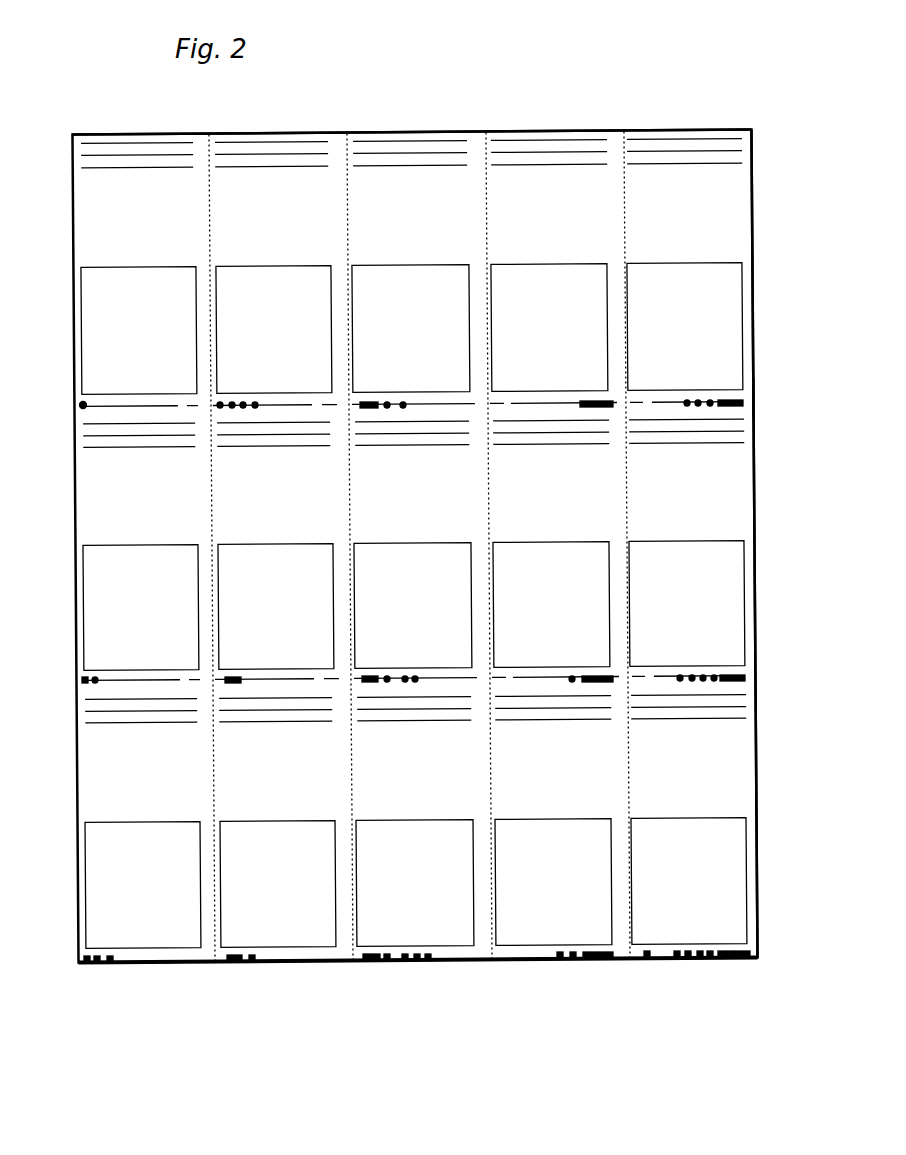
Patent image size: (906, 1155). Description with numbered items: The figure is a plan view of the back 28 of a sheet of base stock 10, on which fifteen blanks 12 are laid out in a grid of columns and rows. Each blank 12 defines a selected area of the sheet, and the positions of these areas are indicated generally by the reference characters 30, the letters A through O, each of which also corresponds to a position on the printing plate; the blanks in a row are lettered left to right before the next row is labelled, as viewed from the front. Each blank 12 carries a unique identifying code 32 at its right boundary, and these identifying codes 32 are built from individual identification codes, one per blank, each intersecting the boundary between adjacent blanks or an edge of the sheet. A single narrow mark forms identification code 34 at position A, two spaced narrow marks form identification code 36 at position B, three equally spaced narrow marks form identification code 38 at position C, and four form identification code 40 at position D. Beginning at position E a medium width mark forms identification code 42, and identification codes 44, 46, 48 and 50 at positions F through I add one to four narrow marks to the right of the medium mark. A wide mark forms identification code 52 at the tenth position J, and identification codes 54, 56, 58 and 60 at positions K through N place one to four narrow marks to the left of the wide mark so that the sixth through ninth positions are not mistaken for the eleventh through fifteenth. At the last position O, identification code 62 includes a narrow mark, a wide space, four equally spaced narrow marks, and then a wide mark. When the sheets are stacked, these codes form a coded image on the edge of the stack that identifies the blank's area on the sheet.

The base stock 10 is at (757, 478).
The blank 12 is at (77, 214).
The back 28 is at (441, 132).
The reference characters 30 is at (712, 798).
The unique identifying code 32 is at (753, 394).
The identification code 34 is at (81, 404).
The identification code 36 is at (88, 676).
The identification code 38 is at (97, 968).
The identification code 40 is at (255, 404).
The identification code 42 is at (233, 676).
The identification code 44 is at (237, 968).
The identification code 46 is at (372, 402).
The identification code 48 is at (372, 672).
The identification code 50 is at (373, 962).
The identification code 52 is at (585, 400).
The identification code 54 is at (588, 672).
The identification code 56 is at (590, 962).
The identification code 58 is at (722, 397).
The identification code 60 is at (722, 675).
The identification code 62 is at (725, 962).